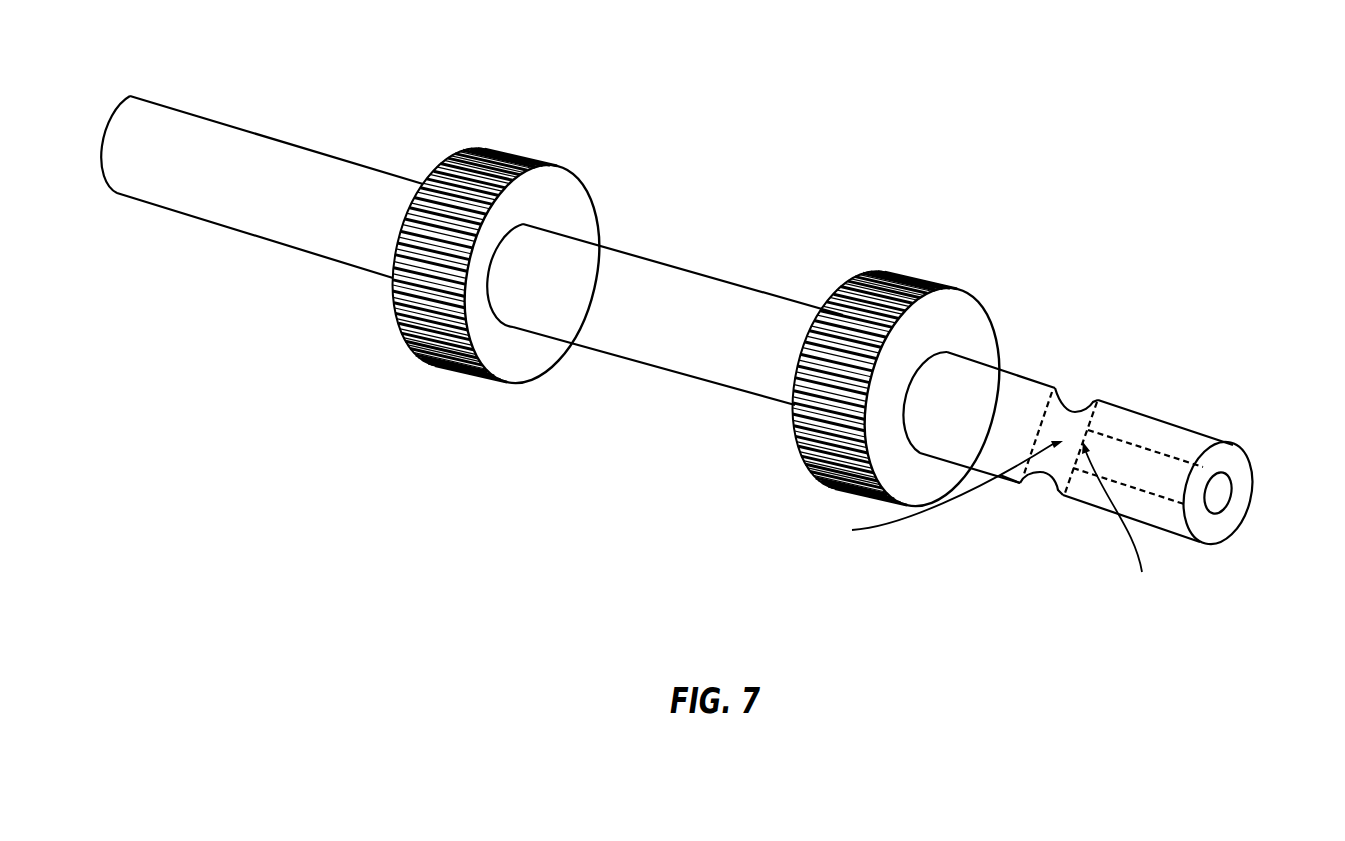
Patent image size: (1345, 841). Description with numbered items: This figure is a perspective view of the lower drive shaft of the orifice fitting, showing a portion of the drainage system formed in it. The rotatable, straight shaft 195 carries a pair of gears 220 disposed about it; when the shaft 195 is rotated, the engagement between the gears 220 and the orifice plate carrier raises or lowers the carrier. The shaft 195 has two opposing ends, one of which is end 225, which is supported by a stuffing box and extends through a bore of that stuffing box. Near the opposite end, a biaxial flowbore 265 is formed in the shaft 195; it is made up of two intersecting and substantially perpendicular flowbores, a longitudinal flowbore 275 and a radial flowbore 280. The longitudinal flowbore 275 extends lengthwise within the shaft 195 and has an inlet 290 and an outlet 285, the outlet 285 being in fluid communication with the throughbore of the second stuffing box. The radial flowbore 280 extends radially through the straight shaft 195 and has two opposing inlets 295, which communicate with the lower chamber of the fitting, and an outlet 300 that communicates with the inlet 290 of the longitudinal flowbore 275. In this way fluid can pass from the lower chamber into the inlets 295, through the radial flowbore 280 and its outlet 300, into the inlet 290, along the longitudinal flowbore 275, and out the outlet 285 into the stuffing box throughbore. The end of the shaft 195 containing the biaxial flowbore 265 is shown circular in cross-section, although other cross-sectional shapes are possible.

The end 225 is at (290, 142).
The gears 220 is at (533, 160).
The straight shaft 195 is at (698, 270).
The longitudinal flowbore 275 is at (1167, 458).
The radial flowbore 280 is at (1050, 393).
The inlets 295 is at (1095, 375).
The outlet 285 is at (1220, 494).
The biaxial flowbore 265 is at (1013, 511).
The inlet 290 is at (933, 495).
The outlet 300 is at (1126, 524).